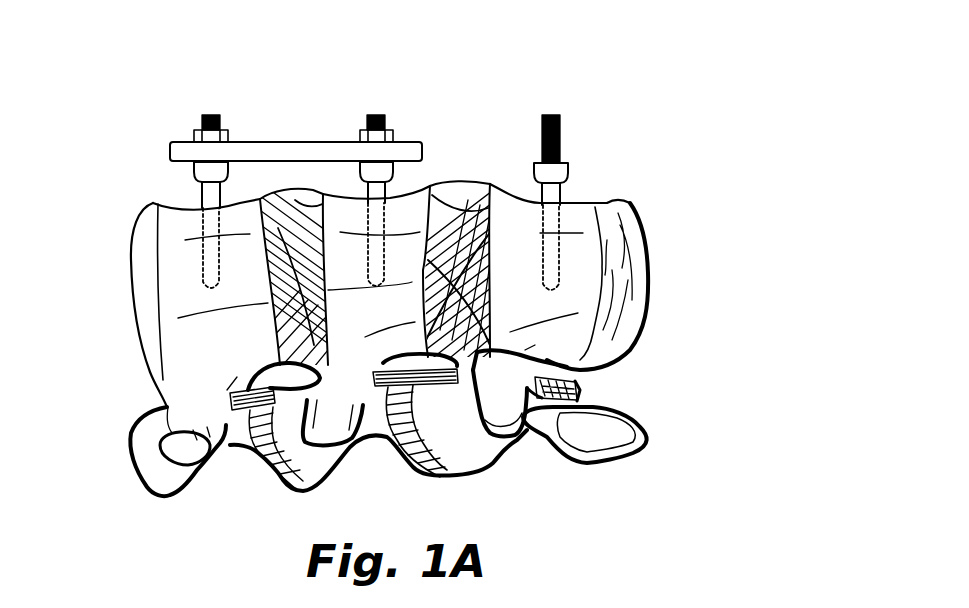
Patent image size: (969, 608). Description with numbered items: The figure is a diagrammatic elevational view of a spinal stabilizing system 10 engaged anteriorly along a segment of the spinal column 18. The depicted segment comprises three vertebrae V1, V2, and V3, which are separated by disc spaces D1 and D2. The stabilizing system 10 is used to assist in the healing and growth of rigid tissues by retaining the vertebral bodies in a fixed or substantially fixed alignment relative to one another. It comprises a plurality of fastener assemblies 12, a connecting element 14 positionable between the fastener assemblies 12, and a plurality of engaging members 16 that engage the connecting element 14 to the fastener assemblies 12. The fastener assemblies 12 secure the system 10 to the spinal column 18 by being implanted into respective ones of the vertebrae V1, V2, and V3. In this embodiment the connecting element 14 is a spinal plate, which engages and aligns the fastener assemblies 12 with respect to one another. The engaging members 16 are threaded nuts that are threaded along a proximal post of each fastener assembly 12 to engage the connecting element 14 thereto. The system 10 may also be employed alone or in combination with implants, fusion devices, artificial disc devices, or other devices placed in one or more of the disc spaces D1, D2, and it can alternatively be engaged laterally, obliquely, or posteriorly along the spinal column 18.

The stabilizing system 10 is at (374, 145).
The fastener assembly 12 is at (190, 170).
The connecting element 14 is at (412, 142).
The engaging member 16 is at (361, 132).
The spinal column 18 is at (339, 293).
The disc space D1 is at (291, 192).
The disc space D2 is at (483, 188).
The vertebra V1 is at (232, 350).
The vertebra V2 is at (378, 323).
The vertebra V3 is at (540, 305).